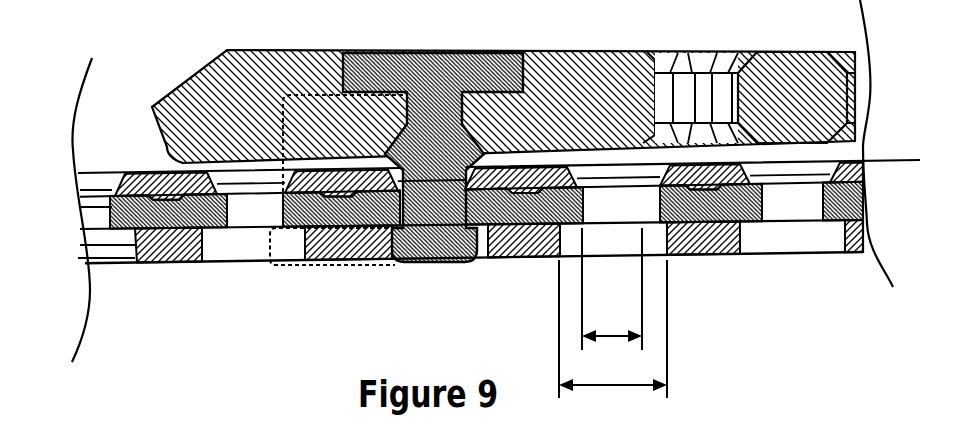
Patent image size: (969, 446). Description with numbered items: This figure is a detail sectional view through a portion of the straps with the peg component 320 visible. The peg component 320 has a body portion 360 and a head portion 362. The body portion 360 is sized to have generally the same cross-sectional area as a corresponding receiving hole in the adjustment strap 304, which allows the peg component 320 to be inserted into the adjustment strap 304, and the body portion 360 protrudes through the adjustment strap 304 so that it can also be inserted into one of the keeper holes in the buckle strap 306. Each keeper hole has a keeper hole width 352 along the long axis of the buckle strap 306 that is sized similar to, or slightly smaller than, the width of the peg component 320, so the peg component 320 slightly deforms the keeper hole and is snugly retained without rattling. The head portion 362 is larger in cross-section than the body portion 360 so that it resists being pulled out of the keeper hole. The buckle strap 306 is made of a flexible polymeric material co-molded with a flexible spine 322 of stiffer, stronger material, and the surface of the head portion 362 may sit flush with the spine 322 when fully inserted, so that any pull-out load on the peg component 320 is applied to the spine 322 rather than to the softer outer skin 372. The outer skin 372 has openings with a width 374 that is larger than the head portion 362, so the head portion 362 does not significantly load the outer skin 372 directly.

The adjustment strap 304 is at (790, 51).
The peg component 320 is at (437, 130).
The body portion 360 is at (283, 128).
The head portion 362 is at (270, 245).
The buckle strap 306 is at (168, 266).
The flexible spine 322 is at (497, 207).
The outer skin 372 is at (523, 240).
The keeper hole width 352 is at (642, 336).
The width 374 is at (635, 329).